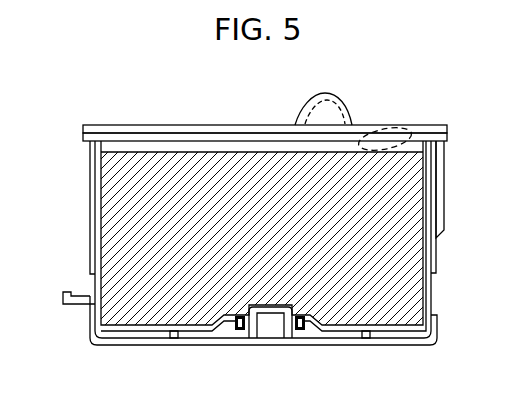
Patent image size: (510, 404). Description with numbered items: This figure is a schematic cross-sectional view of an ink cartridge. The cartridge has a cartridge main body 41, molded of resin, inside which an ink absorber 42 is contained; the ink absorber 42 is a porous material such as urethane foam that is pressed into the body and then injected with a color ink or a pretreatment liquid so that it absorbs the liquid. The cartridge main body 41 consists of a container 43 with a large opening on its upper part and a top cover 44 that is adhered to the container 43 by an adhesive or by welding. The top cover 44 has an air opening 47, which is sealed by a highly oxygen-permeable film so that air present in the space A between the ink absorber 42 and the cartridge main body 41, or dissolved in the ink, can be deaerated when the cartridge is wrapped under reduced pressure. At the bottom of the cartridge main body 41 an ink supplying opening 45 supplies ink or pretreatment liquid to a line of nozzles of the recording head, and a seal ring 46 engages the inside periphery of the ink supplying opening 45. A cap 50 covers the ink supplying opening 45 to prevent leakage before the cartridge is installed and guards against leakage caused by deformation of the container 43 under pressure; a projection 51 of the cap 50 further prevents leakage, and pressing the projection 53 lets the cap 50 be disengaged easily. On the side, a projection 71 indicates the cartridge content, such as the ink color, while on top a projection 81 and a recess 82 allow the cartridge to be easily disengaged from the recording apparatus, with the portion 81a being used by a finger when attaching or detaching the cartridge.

The cartridge main body 41 is at (86, 237).
The ink absorber 42 is at (412, 288).
The container 43 is at (90, 207).
The top cover 44 is at (231, 126).
The ink supplying opening 45 is at (267, 314).
The seal ring 46 is at (243, 331).
The air opening 47 is at (148, 126).
The cap 50 is at (157, 345).
The projection of the cap 51 is at (299, 331).
The projection 53 is at (63, 295).
The projection 71 is at (444, 197).
The projection 81 is at (314, 100).
The portion 81a is at (348, 105).
The recess 82 is at (416, 126).
The space A is at (190, 148).